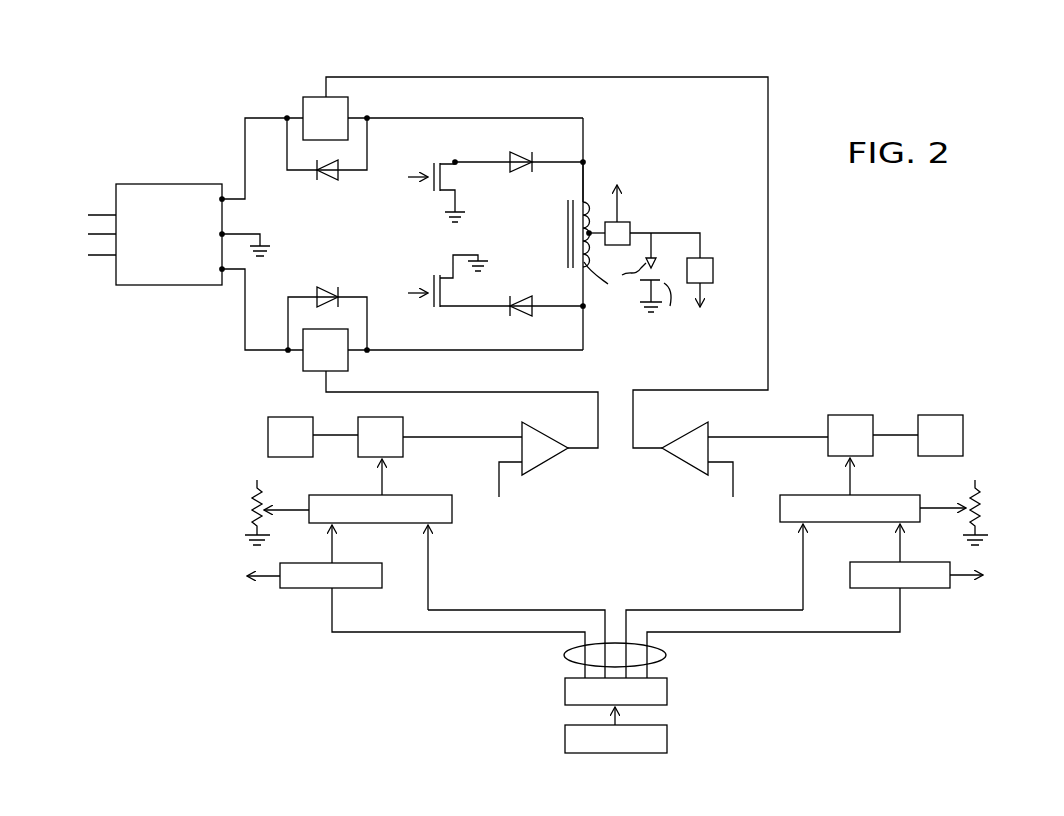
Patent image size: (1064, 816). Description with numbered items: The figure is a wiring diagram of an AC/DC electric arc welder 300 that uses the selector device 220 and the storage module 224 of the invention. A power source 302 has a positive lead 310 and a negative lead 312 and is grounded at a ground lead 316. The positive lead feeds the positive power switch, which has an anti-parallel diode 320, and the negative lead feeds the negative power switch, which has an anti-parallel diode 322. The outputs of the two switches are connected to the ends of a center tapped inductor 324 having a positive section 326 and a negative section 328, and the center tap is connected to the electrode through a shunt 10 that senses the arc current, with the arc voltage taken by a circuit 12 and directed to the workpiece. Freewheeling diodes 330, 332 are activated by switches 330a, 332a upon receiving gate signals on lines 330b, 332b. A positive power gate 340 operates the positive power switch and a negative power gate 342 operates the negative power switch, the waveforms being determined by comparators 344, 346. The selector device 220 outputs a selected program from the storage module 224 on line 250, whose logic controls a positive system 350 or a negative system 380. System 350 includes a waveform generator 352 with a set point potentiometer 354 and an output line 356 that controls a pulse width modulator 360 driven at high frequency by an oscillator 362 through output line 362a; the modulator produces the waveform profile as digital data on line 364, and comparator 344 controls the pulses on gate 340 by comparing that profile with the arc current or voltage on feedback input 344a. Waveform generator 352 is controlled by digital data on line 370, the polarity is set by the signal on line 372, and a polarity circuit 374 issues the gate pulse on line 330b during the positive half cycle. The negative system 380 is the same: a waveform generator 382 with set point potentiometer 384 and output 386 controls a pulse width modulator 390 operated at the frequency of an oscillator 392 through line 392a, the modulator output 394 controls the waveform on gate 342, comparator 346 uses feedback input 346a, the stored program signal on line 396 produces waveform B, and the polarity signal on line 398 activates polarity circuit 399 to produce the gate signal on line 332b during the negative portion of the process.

The electric arc welder 300 is at (550, 69).
The power source 302 is at (155, 184).
The positive lead 310 is at (265, 118).
The negative lead 312 is at (246, 310).
The ground lead 316 is at (247, 234).
The anti-parallel diode 320 is at (330, 178).
The anti-parallel diode 322 is at (322, 290).
The center tapped inductor 324 is at (565, 230).
The positive section 326 is at (587, 200).
The negative section 328 is at (606, 289).
The freewheeling diode 330 is at (518, 173).
The switch 330a is at (441, 160).
The gate signal line 330b is at (425, 185).
The freewheeling diode 332 is at (515, 296).
The switch 332a is at (436, 276).
The gate signal line 332b is at (422, 306).
The shunt 10 is at (631, 222).
The voltage sensor 12 is at (715, 273).
The positive power gate 340 is at (688, 389).
The negative power gate 342 is at (518, 391).
The comparator 344 is at (688, 463).
The feedback input 344a is at (733, 482).
The comparator 346 is at (545, 464).
The feedback input 346a is at (497, 482).
The positive system 350 is at (927, 354).
The waveform generator 352 is at (836, 494).
The set point potentiometer 354 is at (937, 510).
The output line 356 is at (852, 484).
The pulse width modulator 360 is at (840, 415).
The oscillator 362 is at (955, 415).
The output line 362a is at (895, 434).
The line 364 is at (770, 434).
The line 370 is at (803, 580).
The line 372 is at (838, 632).
The polarity circuit 374 is at (935, 588).
The negative system 380 is at (195, 436).
The waveform generator 382 is at (396, 494).
The set point potentiometer 384 is at (292, 511).
The output 386 is at (381, 476).
The pulse width modulator 390 is at (391, 417).
The oscillator 392 is at (285, 417).
The line 392a is at (336, 434).
The output 394 is at (460, 434).
The line 396 is at (428, 583).
The line 398 is at (395, 632).
The polarity circuit 399 is at (300, 588).
The line 250 is at (665, 653).
The storage module 224 is at (667, 691).
The selector device 220 is at (667, 740).